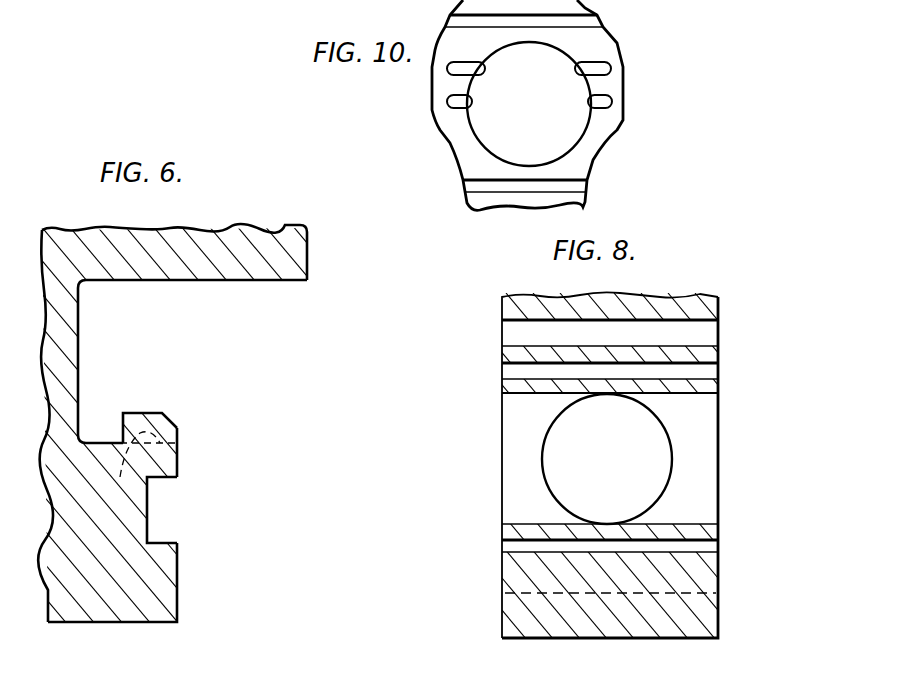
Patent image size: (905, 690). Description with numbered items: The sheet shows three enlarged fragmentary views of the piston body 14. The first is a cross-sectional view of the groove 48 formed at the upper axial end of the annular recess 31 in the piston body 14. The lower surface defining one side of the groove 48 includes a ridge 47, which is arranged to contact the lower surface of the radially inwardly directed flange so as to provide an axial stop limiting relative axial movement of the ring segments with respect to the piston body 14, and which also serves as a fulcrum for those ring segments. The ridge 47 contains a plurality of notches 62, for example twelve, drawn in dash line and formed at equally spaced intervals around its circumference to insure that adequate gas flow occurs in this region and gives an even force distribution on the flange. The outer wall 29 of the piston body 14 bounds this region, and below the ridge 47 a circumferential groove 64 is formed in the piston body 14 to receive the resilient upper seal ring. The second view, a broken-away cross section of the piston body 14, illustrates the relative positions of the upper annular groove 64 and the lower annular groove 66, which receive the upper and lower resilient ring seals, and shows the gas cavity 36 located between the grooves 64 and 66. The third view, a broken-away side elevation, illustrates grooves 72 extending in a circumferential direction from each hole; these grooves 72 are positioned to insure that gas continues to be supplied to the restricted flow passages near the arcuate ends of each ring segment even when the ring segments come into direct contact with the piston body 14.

In FIG. 6, the piston body 14 is at (83, 230).
In FIG. 6, the groove 48 is at (130, 341).
In FIG. 8, the groove 48 is at (708, 333).
In FIG. 6, the ridge 47 is at (163, 425).
In FIG. 6, the outer wall 29 is at (181, 463).
In FIG. 6, the notches 62 is at (141, 468).
In FIG. 6, the circumferential groove 64 is at (148, 528).
In FIG. 8, the circumferential groove 64 is at (710, 372).
In FIG. 6, the annular recess 31 is at (188, 577).
In FIG. 8, the gas cavity 36 is at (709, 506).
In FIG. 8, the lower annular groove 66 is at (709, 546).
In FIG. 10, the grooves 72 is at (592, 102).